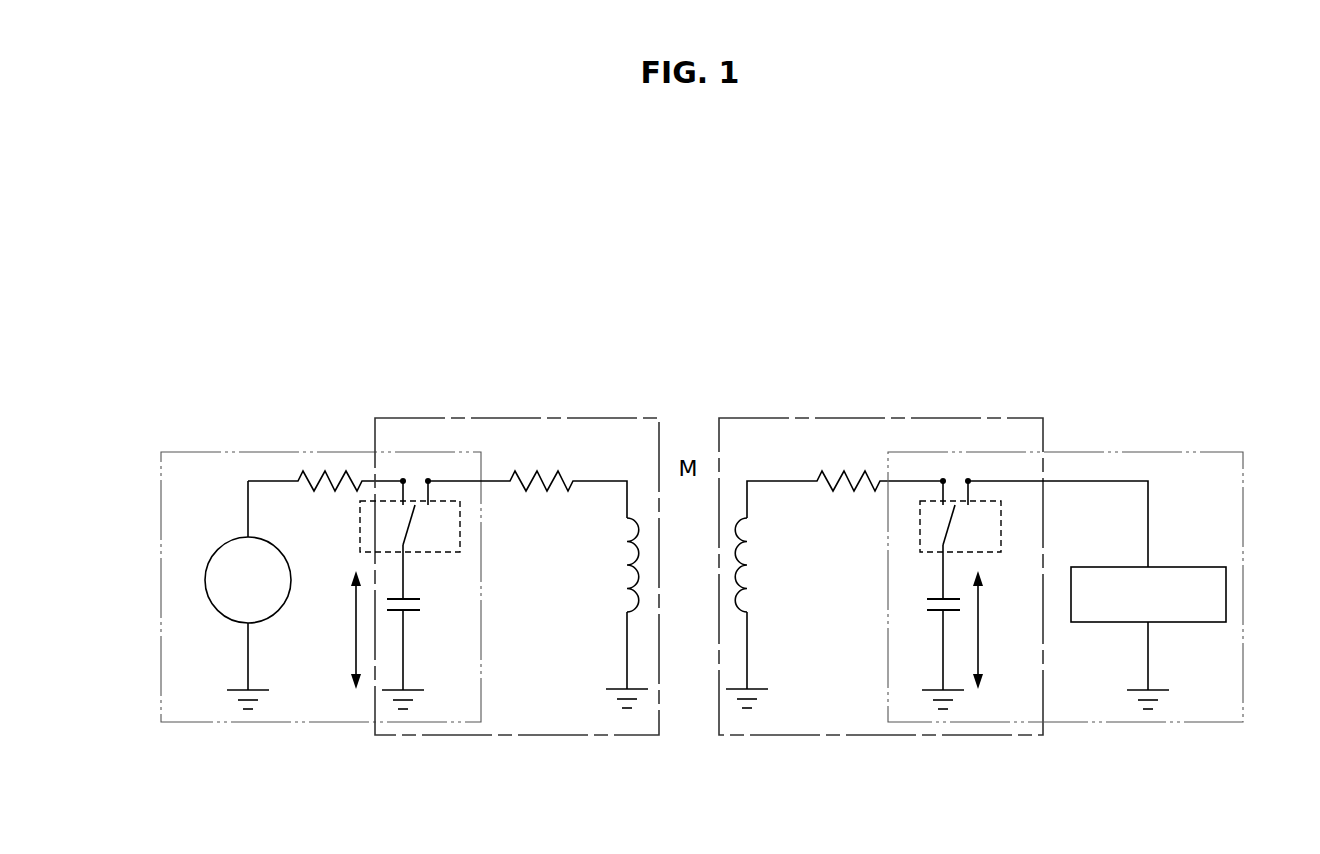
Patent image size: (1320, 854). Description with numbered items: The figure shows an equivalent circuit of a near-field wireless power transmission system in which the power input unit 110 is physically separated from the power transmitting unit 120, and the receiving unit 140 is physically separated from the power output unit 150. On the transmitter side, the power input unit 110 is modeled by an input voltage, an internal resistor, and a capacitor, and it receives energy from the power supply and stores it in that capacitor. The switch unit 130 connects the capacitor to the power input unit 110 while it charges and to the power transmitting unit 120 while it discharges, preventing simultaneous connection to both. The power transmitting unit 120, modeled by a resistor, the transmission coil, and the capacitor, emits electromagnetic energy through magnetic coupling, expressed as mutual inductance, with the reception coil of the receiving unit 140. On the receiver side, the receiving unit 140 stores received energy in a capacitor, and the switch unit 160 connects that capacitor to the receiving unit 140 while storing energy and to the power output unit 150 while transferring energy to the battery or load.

The power input unit 110 is at (265, 450).
The power transmitting unit 120 is at (513, 417).
The switch unit 130 is at (462, 519).
The receiving unit 140 is at (876, 417).
The power output unit 150 is at (1143, 451).
The switch unit 160 is at (918, 517).